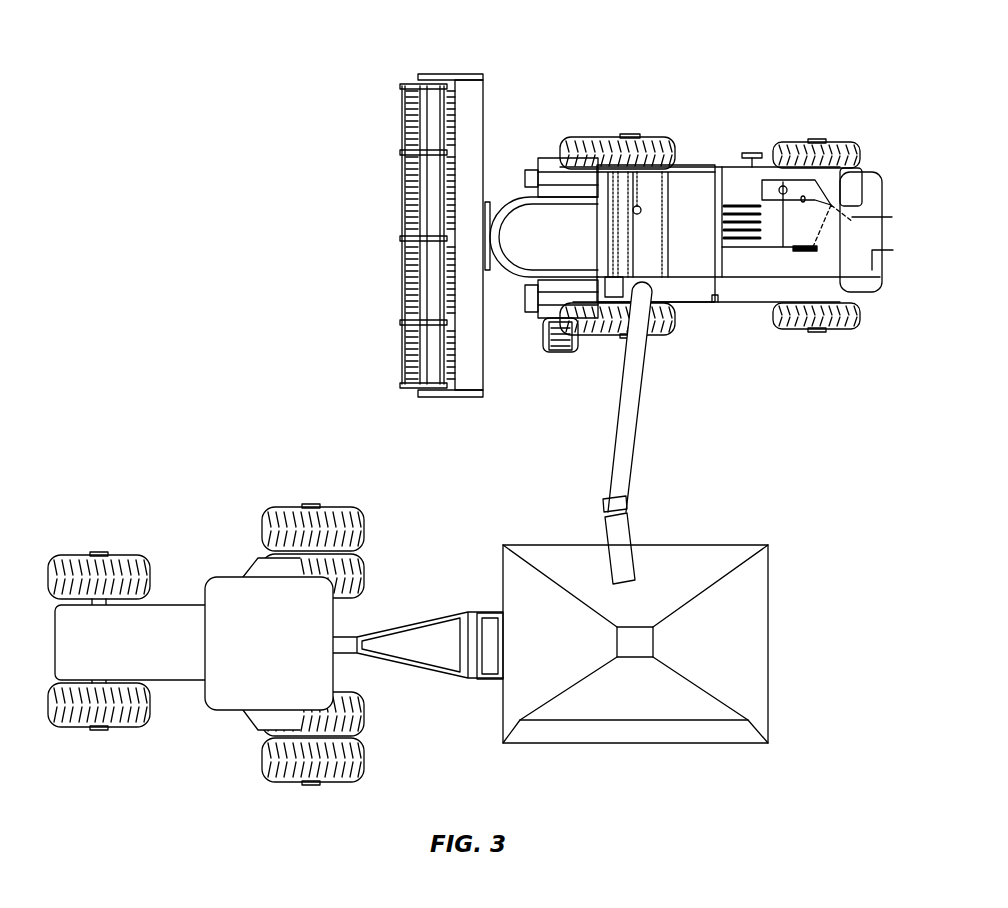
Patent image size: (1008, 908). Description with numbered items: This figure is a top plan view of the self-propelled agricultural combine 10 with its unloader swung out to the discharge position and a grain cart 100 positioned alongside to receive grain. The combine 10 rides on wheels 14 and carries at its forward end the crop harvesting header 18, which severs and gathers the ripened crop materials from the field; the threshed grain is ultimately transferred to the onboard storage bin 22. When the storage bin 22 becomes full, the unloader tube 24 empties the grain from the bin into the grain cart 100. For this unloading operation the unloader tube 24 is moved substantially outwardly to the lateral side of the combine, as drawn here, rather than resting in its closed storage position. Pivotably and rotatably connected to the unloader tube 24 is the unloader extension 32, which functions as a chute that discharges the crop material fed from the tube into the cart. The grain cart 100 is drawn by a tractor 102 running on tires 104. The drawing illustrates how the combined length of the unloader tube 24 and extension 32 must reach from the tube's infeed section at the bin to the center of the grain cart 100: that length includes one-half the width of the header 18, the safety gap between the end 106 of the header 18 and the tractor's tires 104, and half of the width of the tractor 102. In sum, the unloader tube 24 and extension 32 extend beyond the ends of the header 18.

The agricultural combine 10 is at (722, 89).
The wheels 14 is at (613, 139).
The crop harvesting header 18 is at (398, 207).
The onboard storage bin 22 is at (698, 193).
The unloader tube 24 is at (635, 413).
The unloader extension 32 is at (628, 540).
The grain cart 100 is at (708, 545).
The tractor 102 is at (178, 534).
The tractor's tires 104 is at (338, 507).
The end of the header 106 is at (448, 398).